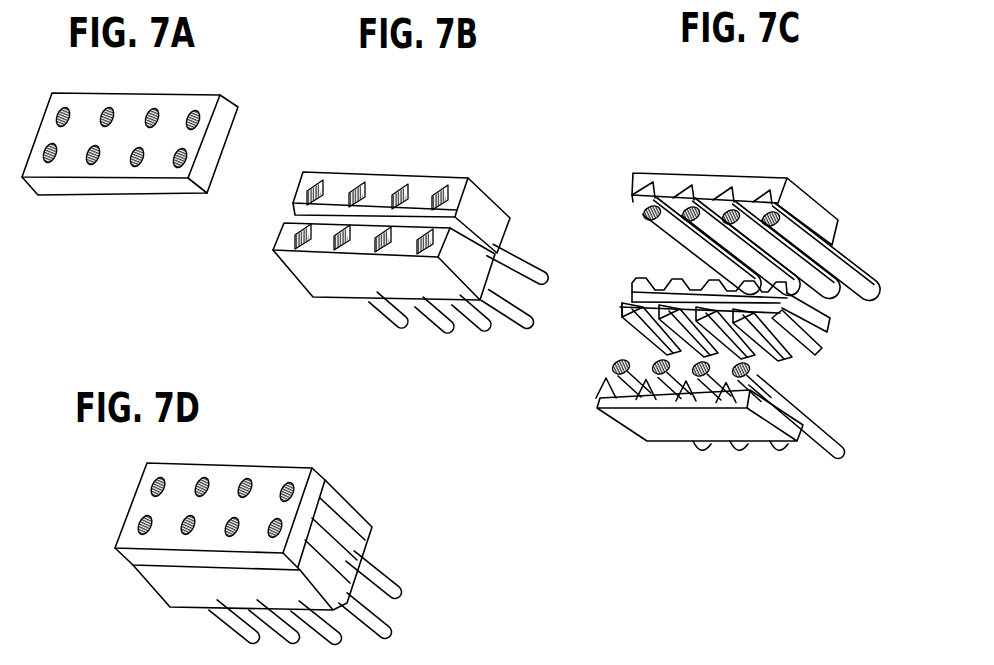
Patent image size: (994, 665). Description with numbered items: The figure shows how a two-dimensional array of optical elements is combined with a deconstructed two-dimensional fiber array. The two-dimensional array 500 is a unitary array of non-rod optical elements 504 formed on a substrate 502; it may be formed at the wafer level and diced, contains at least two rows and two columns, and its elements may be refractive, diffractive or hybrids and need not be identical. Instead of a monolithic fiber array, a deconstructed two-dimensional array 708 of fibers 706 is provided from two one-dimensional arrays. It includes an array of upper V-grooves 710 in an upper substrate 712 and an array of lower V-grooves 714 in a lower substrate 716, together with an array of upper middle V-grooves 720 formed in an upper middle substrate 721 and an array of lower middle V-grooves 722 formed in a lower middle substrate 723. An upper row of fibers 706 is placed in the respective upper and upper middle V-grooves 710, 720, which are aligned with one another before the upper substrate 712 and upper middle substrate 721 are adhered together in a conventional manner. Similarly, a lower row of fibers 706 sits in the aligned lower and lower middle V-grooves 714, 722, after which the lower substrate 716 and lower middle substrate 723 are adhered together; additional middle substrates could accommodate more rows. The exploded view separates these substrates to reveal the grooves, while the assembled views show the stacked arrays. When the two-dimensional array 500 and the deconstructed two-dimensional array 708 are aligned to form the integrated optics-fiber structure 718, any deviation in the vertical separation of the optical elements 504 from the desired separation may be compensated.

In FIG. 7A, the two-dimensional array 500 is at (165, 116).
In FIG. 7D, the two-dimensional array 500 is at (295, 459).
In FIG. 7A, the substrate 502 is at (234, 128).
In FIG. 7A, the non-rod optical elements 504 is at (70, 113).
In FIG. 7B, the fibers 706 is at (513, 247).
In FIG. 7B, the deconstructed two-dimensional array 708 is at (394, 233).
In FIG. 7C, the deconstructed two-dimensional array 708 is at (756, 215).
In FIG. 7D, the deconstructed two-dimensional array 708 is at (354, 494).
In FIG. 7B, the upper V-grooves 710 is at (440, 192).
In FIG. 7C, the upper V-grooves 710 is at (683, 197).
In FIG. 7B, the upper substrate 712 is at (399, 170).
In FIG. 7C, the upper substrate 712 is at (742, 173).
In FIG. 7B, the lower V-grooves 714 is at (334, 244).
In FIG. 7C, the lower V-grooves 714 is at (603, 392).
In FIG. 7B, the lower substrate 716 is at (328, 292).
In FIG. 7C, the lower substrate 716 is at (696, 420).
In FIG. 7D, the integrated optics-fiber structure 718 is at (220, 529).
In FIG. 7B, the upper middle V-grooves 720 is at (298, 216).
In FIG. 7C, the upper middle V-grooves 720 is at (716, 299).
In FIG. 7B, the upper middle substrate 721 is at (299, 203).
In FIG. 7C, the upper middle substrate 721 is at (822, 331).
In FIG. 7B, the lower middle V-grooves 722 is at (282, 249).
In FIG. 7C, the lower middle V-grooves 722 is at (630, 337).
In FIG. 7B, the lower middle substrate 723 is at (518, 299).
In FIG. 7C, the lower middle substrate 723 is at (818, 358).